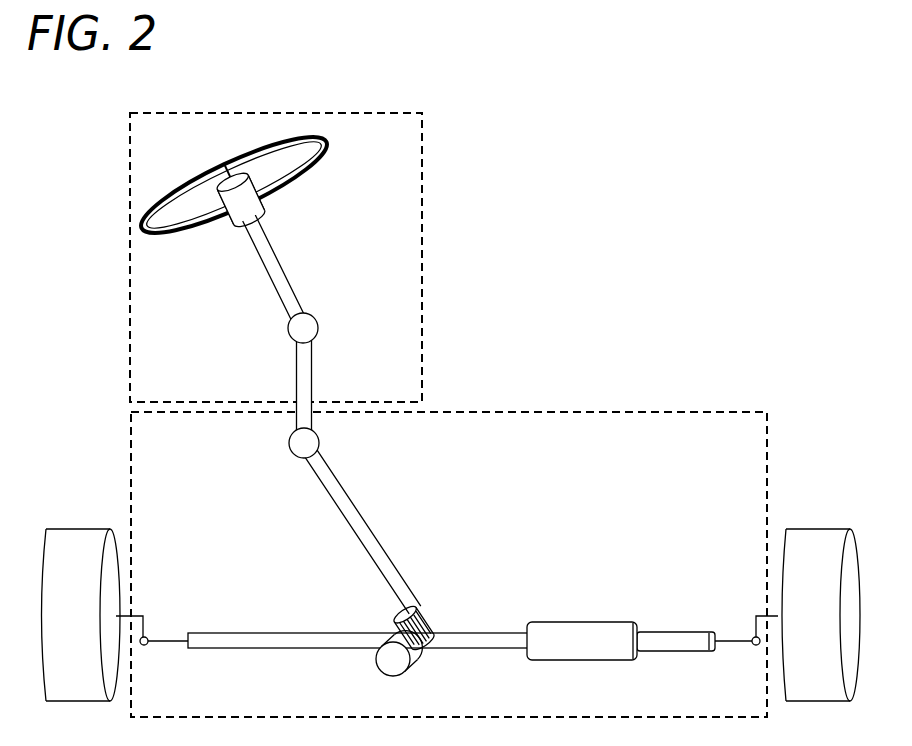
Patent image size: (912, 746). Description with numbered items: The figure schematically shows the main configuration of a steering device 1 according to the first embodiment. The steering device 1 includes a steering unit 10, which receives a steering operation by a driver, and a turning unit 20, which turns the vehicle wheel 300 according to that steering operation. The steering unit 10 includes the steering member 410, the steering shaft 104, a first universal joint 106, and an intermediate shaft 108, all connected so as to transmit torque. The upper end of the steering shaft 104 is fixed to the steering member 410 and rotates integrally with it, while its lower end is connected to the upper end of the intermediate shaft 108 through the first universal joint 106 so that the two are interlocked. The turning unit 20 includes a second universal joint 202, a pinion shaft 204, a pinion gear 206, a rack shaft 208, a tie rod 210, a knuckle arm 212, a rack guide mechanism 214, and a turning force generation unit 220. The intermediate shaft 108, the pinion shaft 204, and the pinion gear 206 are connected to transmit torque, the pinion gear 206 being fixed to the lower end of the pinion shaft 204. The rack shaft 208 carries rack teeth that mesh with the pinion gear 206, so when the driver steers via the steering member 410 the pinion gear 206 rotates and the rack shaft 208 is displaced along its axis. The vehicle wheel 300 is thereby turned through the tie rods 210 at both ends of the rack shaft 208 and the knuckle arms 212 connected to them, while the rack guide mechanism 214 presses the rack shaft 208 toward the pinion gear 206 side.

The steering device 1 is at (668, 163).
The steering unit 10 is at (129, 364).
The turning unit 20 is at (129, 449).
The steering member 410 is at (326, 143).
The steering shaft 104 is at (284, 276).
The first universal joint 106 is at (318, 328).
The intermediate shaft 108 is at (311, 383).
The second universal joint 202 is at (319, 443).
The pinion shaft 204 is at (365, 531).
The pinion gear 206 is at (426, 620).
The rack shaft 208 is at (472, 650).
The tie rod 210 is at (171, 647).
The knuckle arm 212 is at (149, 617).
The rack guide mechanism 214 is at (395, 667).
The turning force generation unit 220 is at (580, 661).
The vehicle wheel 300 is at (80, 528).